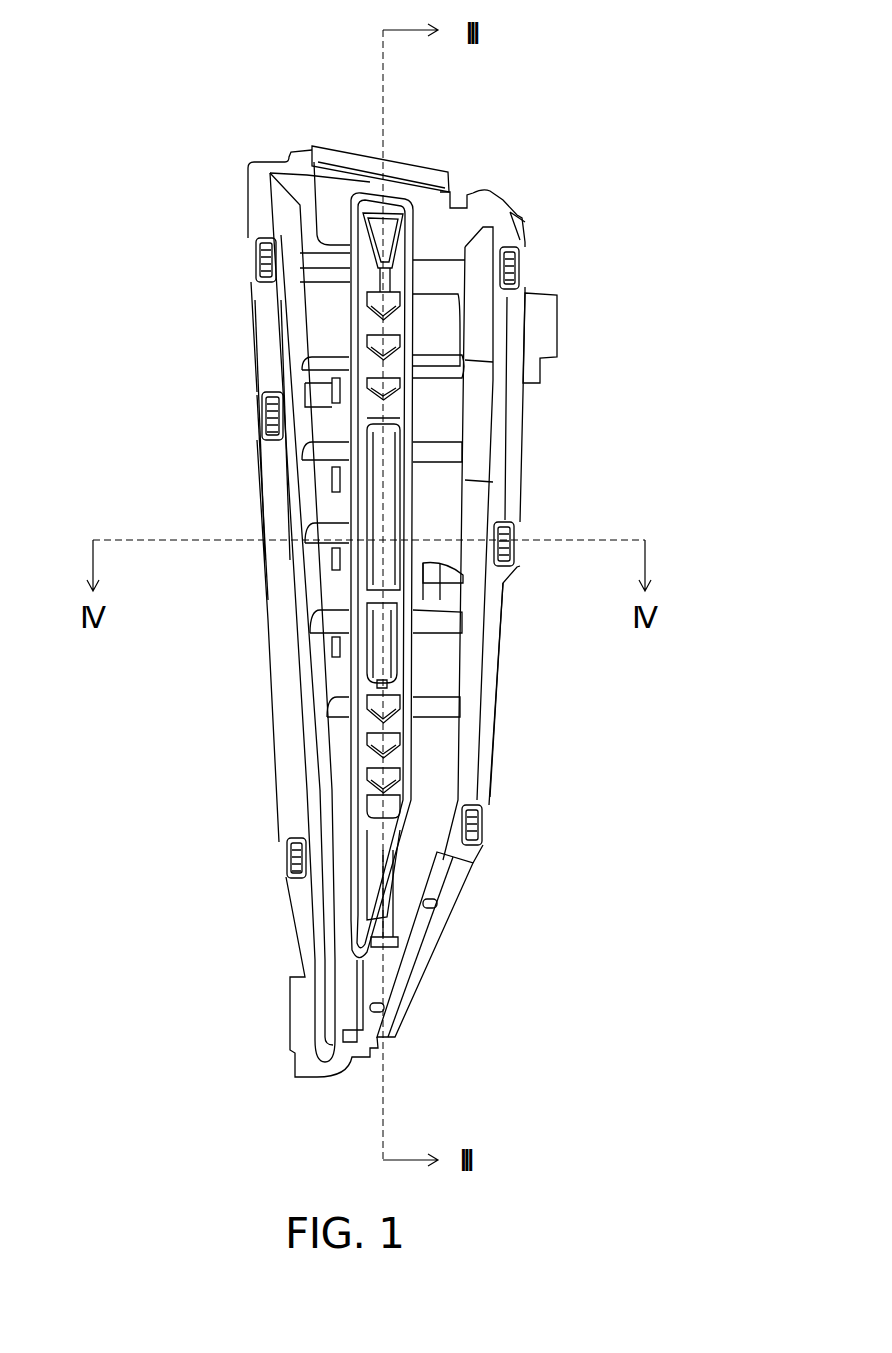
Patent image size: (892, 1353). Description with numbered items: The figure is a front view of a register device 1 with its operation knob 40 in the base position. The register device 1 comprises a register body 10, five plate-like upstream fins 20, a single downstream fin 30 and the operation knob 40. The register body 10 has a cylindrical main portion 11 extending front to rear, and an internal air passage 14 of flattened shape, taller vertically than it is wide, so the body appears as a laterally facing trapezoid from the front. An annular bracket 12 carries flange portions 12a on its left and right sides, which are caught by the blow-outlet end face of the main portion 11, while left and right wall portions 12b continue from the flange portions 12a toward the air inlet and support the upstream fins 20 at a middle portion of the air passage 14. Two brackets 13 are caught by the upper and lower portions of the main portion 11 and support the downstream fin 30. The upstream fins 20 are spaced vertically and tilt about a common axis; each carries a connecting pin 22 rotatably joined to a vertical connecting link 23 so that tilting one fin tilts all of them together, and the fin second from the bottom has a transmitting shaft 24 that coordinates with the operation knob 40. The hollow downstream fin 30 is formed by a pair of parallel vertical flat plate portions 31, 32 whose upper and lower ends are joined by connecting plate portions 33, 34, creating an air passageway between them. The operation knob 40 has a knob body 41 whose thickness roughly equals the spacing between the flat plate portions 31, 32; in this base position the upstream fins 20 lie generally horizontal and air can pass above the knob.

The register device 1 is at (558, 175).
The register body 10 is at (485, 190).
The main portion 11 is at (495, 213).
The bracket 12 is at (603, 413).
The flange portion 12a is at (273, 312).
The wall portion 12b is at (288, 340).
The bracket 13 is at (436, 215).
The air passage 14 is at (454, 506).
The upstream fin 20 is at (323, 354).
The connecting pin 22 is at (333, 390).
The connecting link 23 is at (340, 398).
The transmitting shaft 24 is at (443, 567).
The downstream fin 30 is at (437, 327).
The flat plate portion 31 is at (413, 278).
The flat plate portion 32 is at (353, 222).
The connecting plate portion 33 is at (394, 200).
The connecting plate portion 34 is at (393, 873).
The operation knob 40 is at (404, 515).
The knob body 41 is at (388, 645).